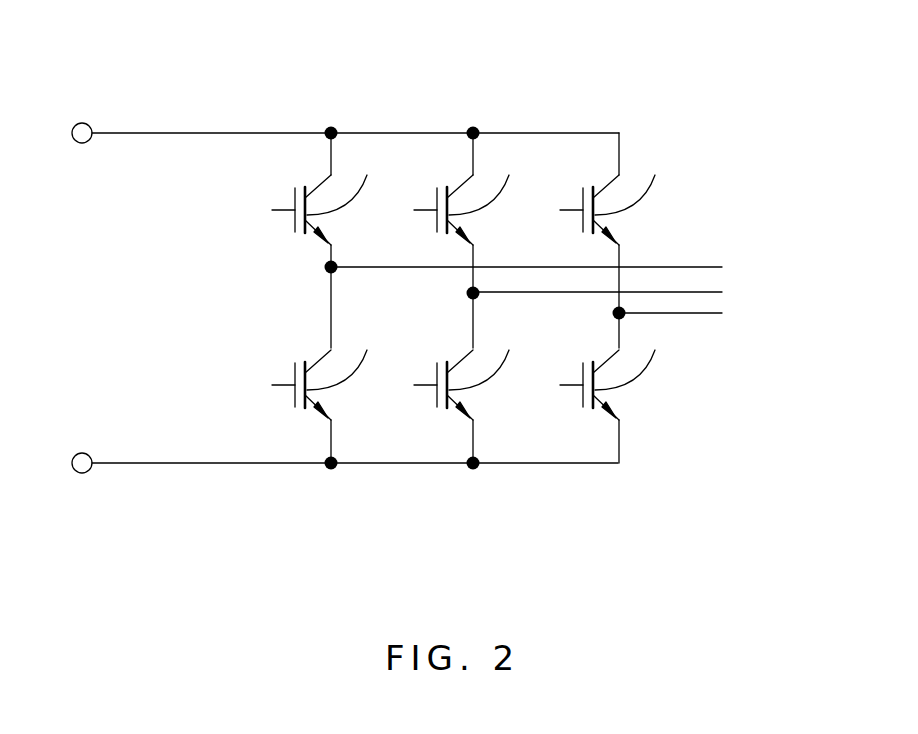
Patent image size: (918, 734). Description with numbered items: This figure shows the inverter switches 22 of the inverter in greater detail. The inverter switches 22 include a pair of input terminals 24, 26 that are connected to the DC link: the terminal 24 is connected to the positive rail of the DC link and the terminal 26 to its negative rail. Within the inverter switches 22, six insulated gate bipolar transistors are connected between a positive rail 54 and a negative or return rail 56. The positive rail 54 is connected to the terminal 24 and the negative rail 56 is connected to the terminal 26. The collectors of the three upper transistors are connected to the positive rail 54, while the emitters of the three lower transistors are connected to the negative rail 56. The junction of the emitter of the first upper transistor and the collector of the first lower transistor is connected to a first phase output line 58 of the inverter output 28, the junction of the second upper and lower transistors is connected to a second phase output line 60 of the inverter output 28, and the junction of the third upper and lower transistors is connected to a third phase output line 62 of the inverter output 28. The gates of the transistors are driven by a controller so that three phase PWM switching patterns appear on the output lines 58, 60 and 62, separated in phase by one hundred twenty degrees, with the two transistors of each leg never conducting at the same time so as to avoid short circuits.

The inverter switches 22 is at (404, 66).
The input terminal 24 is at (82, 123).
The input terminal 26 is at (82, 473).
The inverter output 28 is at (716, 128).
The positive rail 54 is at (522, 133).
The negative rail 56 is at (513, 463).
The first phase output line 58 is at (668, 267).
The second phase output line 60 is at (675, 292).
The third phase output line 62 is at (705, 313).